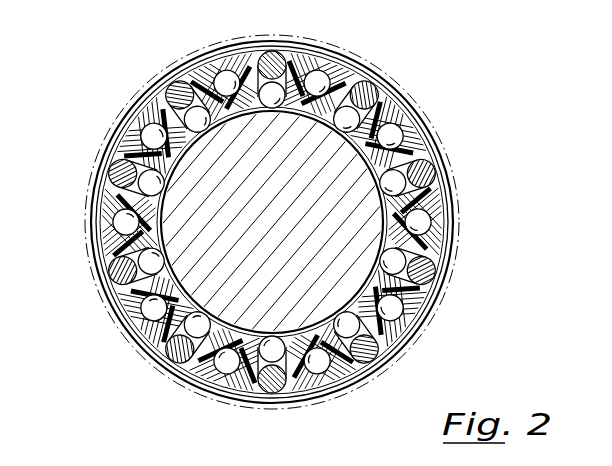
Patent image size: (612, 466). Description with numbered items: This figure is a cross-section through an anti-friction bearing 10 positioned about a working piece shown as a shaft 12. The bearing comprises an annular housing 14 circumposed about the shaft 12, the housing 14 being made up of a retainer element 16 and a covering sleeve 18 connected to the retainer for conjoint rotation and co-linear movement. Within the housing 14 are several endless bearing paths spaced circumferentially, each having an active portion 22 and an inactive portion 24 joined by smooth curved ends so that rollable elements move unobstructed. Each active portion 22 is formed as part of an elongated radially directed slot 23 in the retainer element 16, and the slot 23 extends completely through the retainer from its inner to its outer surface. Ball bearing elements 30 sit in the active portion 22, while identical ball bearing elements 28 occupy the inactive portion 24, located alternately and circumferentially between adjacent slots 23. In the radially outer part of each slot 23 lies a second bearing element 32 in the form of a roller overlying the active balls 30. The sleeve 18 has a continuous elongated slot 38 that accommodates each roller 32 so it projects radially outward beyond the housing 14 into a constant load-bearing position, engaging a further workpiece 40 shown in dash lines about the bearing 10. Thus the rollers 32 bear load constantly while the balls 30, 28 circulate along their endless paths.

The anti-friction bearing 10 is at (490, 160).
The shaft 12 is at (324, 350).
The housing 14 is at (104, 326).
The retainer element 16 is at (296, 66).
The sleeve 18 is at (364, 60).
The active portion 22 is at (199, 131).
The slot 23 is at (398, 112).
The inactive portion 24 is at (234, 68).
The bearing elements 28 is at (403, 315).
The bearing elements 30 is at (270, 108).
The second bearing element 32 is at (371, 84).
The slot 38 is at (437, 286).
The workpiece 40 is at (463, 228).